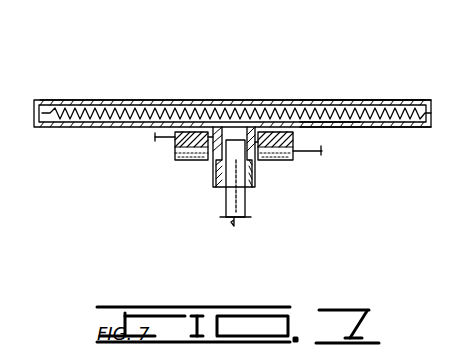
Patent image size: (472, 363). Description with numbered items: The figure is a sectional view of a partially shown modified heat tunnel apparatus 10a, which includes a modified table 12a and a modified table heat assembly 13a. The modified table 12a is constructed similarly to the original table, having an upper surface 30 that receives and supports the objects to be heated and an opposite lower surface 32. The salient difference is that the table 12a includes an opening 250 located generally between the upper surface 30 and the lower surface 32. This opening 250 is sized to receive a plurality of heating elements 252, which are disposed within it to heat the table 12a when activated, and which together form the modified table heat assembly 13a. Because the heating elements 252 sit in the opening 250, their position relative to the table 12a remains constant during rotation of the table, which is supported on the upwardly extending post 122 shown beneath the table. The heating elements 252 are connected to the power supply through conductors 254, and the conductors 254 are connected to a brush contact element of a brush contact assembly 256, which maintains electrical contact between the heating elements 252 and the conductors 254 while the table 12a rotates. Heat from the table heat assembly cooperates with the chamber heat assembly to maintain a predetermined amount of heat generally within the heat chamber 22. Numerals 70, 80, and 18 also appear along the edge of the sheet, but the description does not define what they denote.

The modified heat tunnel apparatus 10a is at (269, 78).
The modified table 12a is at (68, 100).
The modified table heat assembly 13a is at (327, 120).
The upper surface 30 is at (375, 100).
The lower surface 32 is at (403, 128).
The post 122 is at (231, 204).
The opening 250 is at (44, 115).
The heating elements 252 is at (100, 112).
The conductors 254 is at (150, 139).
The brush contact assembly 256 is at (178, 163).
The frame member 70 is at (0, 57).
The frame member 80 is at (15, 192).
The heat chamber 22 is at (1, 248).
The base 18 is at (8, 298).